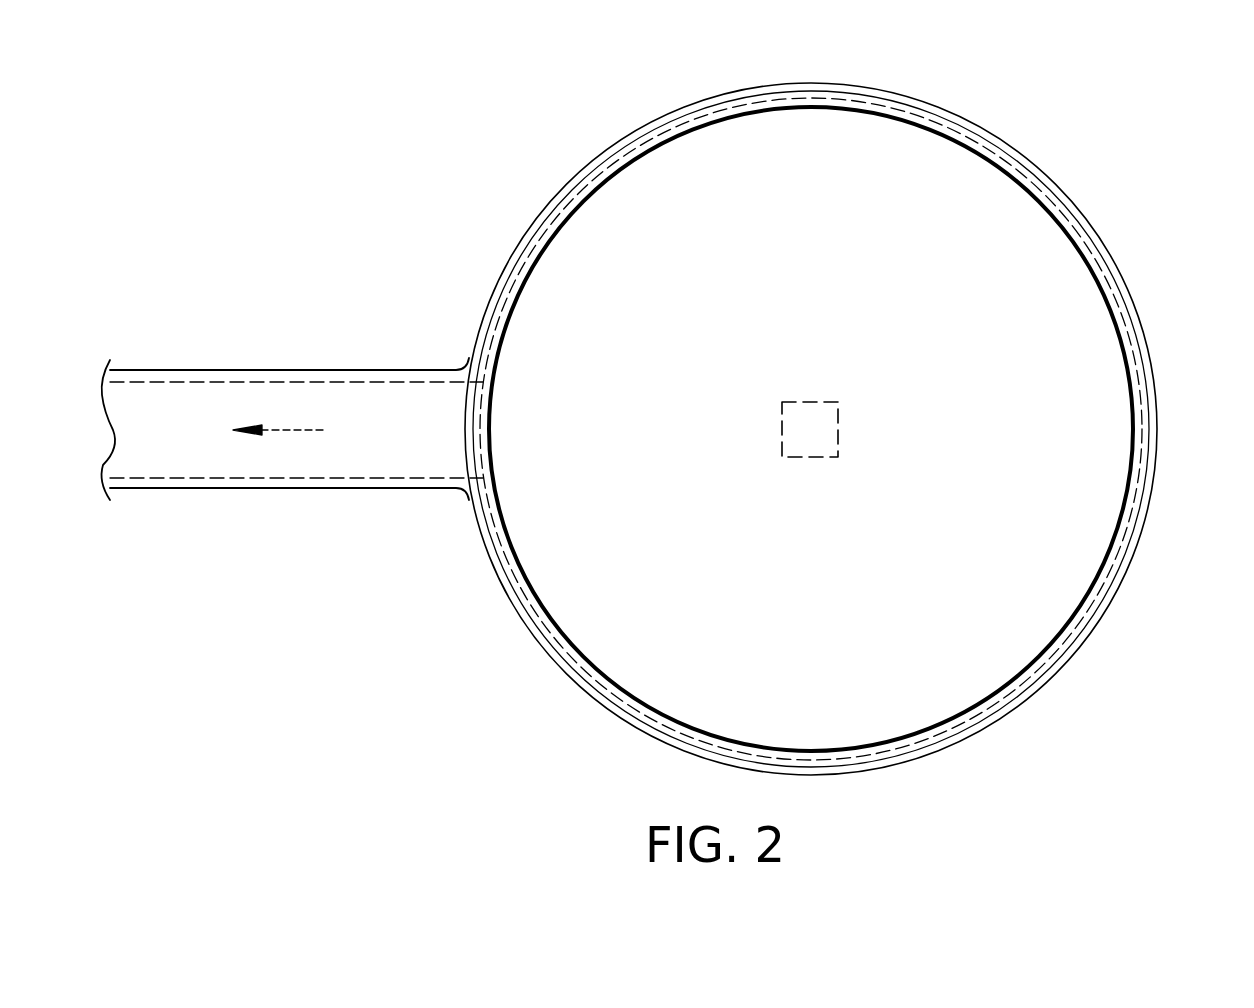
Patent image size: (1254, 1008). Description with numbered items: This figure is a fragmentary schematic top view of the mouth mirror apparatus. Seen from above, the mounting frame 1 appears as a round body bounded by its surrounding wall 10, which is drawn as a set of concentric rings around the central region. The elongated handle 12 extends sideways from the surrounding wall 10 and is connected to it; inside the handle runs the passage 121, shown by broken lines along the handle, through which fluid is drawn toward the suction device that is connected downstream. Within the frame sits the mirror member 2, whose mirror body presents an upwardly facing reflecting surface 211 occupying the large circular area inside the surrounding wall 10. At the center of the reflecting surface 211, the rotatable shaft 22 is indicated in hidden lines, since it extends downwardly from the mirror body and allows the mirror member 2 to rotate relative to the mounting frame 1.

The mounting frame 1 is at (1166, 215).
The surrounding wall 10 is at (1140, 312).
The elongated handle 12 is at (342, 370).
The passage 121 is at (358, 453).
The mirror member 2 is at (963, 145).
The reflecting surface 211 is at (670, 200).
The rotatable shaft 22 is at (812, 417).